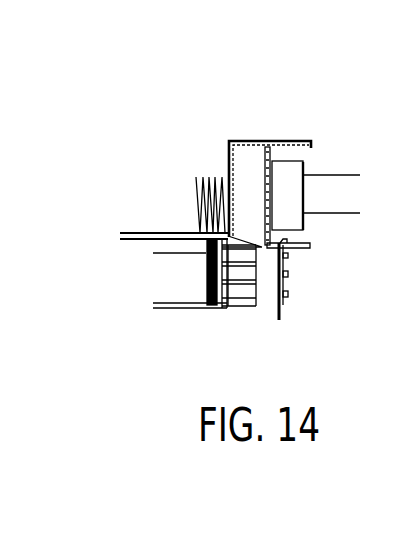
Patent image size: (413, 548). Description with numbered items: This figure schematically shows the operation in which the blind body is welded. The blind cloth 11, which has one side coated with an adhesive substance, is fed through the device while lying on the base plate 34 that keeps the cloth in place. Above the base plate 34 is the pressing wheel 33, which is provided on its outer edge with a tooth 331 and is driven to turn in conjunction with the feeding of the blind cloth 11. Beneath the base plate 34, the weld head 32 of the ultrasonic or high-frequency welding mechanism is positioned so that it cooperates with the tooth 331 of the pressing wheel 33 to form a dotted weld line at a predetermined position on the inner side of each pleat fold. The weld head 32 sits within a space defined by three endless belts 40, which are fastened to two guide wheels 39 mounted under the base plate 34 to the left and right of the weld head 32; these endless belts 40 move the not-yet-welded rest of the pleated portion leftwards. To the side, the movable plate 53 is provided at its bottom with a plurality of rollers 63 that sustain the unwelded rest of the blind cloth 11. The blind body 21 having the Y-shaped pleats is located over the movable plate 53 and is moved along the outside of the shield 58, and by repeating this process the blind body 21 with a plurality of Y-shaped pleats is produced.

The blind cloth 11 is at (203, 277).
The blind body 21 is at (198, 202).
The weld head 32 is at (270, 293).
The pressing wheel 33 is at (293, 173).
The base plate 34 is at (305, 243).
The guide wheels 39 is at (286, 285).
The endless belts 40 is at (287, 297).
The movable plate 53 is at (153, 236).
The shield 58 is at (240, 139).
The rollers 63 is at (153, 253).
The tooth 331 is at (268, 140).